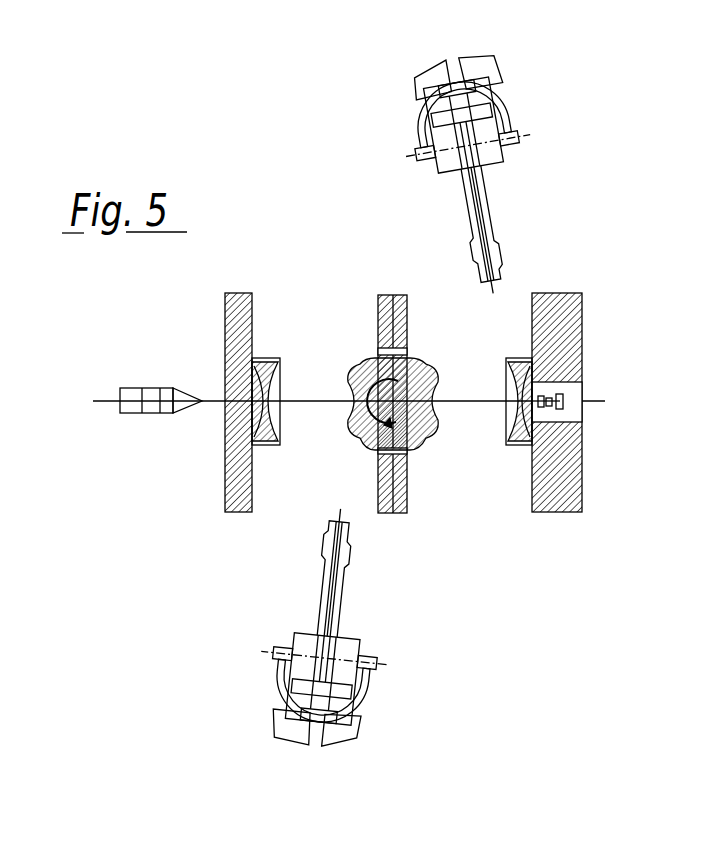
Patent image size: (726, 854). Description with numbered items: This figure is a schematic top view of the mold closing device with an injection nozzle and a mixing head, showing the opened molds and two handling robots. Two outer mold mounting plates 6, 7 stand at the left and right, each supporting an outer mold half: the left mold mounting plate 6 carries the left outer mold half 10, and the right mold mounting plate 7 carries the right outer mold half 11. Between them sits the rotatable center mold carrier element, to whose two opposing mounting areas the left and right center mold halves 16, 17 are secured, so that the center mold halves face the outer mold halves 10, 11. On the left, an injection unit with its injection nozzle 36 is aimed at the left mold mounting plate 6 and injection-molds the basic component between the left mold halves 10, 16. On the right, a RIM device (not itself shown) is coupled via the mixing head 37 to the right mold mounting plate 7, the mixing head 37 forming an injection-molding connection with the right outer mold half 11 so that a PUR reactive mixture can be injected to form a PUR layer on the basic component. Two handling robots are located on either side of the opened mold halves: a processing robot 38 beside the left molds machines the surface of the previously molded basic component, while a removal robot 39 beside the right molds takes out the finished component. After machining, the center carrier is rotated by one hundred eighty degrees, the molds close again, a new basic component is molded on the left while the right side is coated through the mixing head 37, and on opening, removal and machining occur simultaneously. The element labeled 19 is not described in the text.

The left outer mold mounting plate 6 is at (237, 304).
The right outer mold mounting plate 7 is at (558, 306).
The left outer mold half 10 is at (263, 360).
The right outer mold half 11 is at (521, 448).
The left center mold half 16 is at (367, 368).
The right center mold half 17 is at (422, 369).
The central spindle 19 is at (403, 498).
The injection nozzle 36 is at (183, 406).
The mixing head 37 is at (563, 407).
The processing robot 38 is at (296, 605).
The removal robot 39 is at (512, 178).